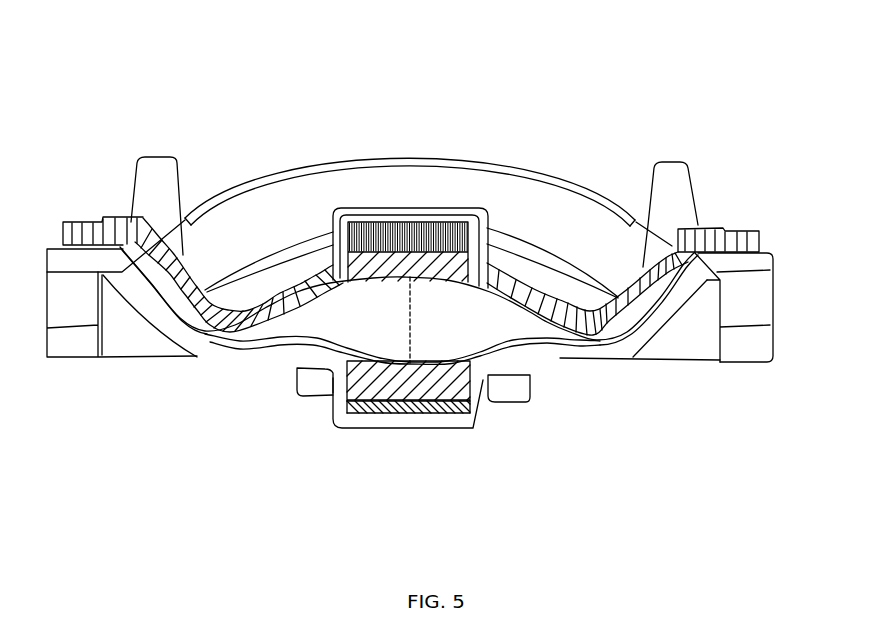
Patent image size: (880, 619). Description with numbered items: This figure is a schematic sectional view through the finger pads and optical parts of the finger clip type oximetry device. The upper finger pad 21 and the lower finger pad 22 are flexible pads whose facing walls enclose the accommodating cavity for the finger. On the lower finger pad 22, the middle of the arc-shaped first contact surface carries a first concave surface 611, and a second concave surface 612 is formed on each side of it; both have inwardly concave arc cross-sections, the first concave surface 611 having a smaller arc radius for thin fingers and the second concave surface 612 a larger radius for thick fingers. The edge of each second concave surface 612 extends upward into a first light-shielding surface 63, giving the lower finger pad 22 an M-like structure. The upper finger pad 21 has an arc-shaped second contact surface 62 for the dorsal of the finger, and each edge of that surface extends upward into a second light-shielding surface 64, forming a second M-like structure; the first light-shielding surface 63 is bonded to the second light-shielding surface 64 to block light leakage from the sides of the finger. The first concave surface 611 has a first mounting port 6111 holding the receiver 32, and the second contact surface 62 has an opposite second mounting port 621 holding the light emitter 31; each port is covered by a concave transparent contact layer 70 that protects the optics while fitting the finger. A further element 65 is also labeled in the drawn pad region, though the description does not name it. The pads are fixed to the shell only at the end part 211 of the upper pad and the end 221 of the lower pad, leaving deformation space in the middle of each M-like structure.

The upper finger pad 21 is at (472, 180).
The end part 211 is at (733, 242).
The lower finger pad 22 is at (693, 337).
The end 221 is at (753, 360).
The light emitter 31 is at (410, 233).
The receiver 32 is at (357, 420).
The second contact surface 62 is at (305, 280).
The second mounting port 621 is at (347, 250).
The first light-shielding surface 63 is at (158, 307).
The second light-shielding surface 64 is at (135, 272).
The elastic dome 65 is at (423, 308).
The transparent contact layer 70 is at (453, 262).
The first concave surface 611 is at (400, 365).
The second concave surface 612 is at (254, 347).
The first mounting port 6111 is at (350, 394).